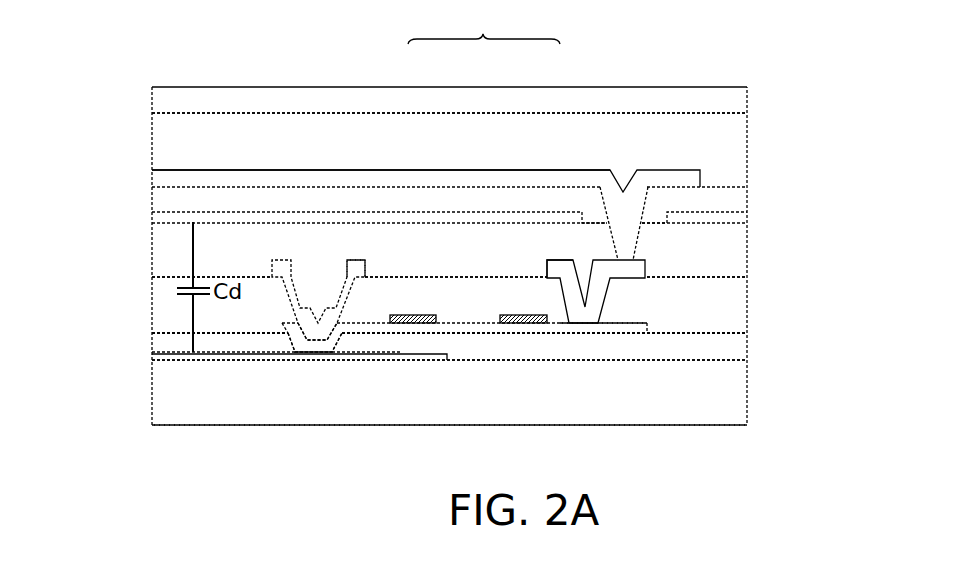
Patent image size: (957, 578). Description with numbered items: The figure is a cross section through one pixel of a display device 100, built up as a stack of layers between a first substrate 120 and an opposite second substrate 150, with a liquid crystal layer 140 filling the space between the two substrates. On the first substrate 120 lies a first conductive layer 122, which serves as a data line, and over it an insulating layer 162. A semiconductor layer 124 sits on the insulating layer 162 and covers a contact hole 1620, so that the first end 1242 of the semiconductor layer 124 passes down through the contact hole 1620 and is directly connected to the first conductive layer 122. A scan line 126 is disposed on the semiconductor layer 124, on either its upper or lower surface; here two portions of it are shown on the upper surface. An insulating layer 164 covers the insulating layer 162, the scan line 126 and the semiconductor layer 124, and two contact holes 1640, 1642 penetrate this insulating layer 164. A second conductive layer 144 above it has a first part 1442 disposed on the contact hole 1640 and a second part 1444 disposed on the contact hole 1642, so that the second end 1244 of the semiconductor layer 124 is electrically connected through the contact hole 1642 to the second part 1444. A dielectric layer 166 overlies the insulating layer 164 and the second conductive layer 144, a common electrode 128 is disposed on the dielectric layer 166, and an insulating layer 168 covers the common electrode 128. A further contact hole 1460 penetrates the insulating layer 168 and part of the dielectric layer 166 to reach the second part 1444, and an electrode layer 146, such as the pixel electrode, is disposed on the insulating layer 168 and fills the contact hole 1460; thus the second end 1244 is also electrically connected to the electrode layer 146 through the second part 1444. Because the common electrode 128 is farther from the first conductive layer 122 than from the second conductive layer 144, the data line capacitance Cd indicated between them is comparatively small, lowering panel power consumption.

The display device 100 is at (75, 35).
The second substrate 150 is at (159, 103).
The liquid crystal layer 140 is at (153, 144).
The electrode layer 146 is at (160, 177).
The insulating layer 168 is at (157, 205).
The common electrode 128 is at (157, 222).
The dielectric layer 166 is at (168, 251).
The insulating layer 164 is at (160, 315).
The insulating layer 162 is at (160, 343).
The first conductive layer 122 is at (157, 362).
The first substrate 120 is at (169, 389).
The second conductive layer 144 is at (484, 27).
The first part 1442 is at (356, 272).
The second part 1444 is at (561, 272).
The contact hole 1460 is at (661, 211).
The contact hole 1642 is at (620, 301).
The semiconductor layer 124 is at (640, 328).
The contact hole 1640 is at (273, 309).
The contact hole 1620 is at (283, 342).
The first end 1242 is at (318, 356).
The scan line 126 is at (437, 320).
The second end 1244 is at (623, 337).